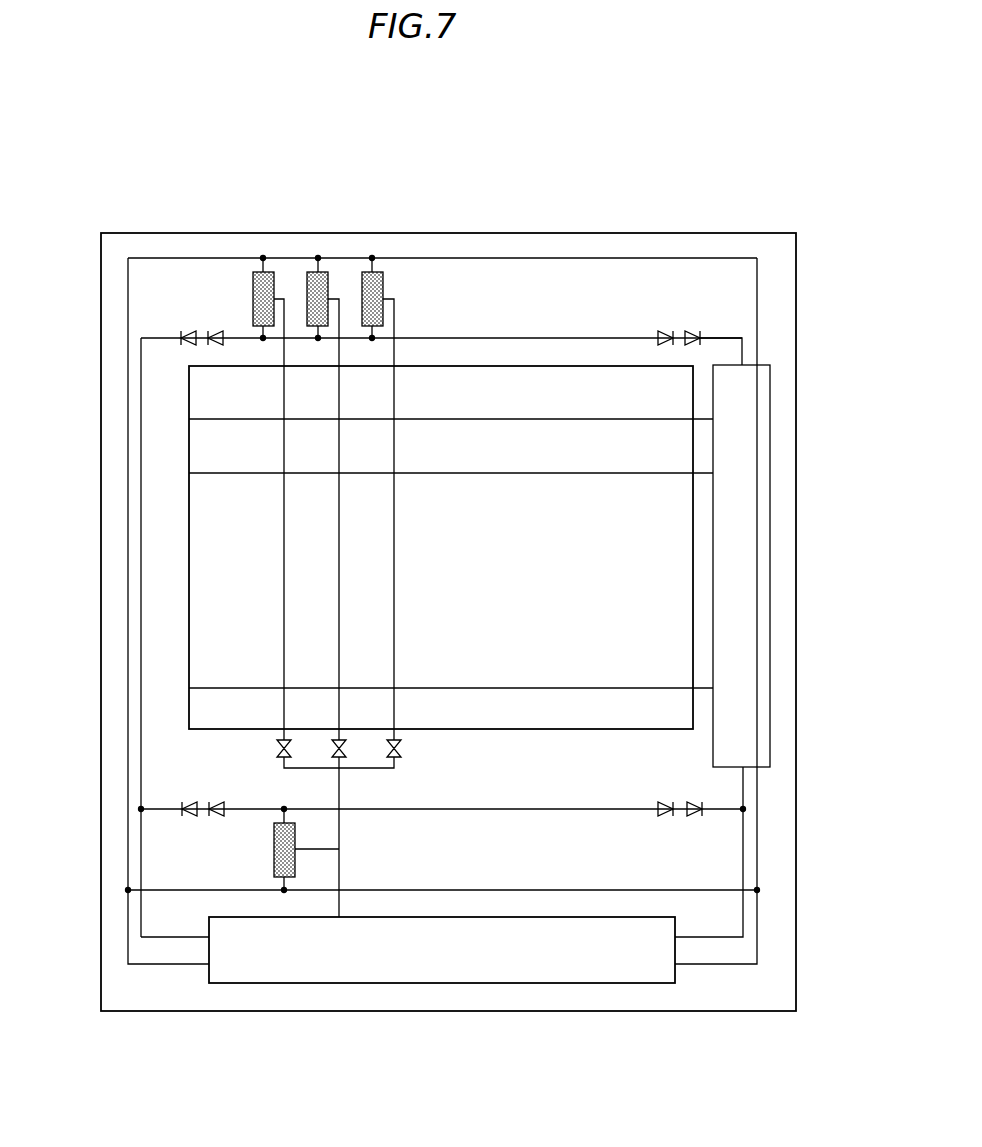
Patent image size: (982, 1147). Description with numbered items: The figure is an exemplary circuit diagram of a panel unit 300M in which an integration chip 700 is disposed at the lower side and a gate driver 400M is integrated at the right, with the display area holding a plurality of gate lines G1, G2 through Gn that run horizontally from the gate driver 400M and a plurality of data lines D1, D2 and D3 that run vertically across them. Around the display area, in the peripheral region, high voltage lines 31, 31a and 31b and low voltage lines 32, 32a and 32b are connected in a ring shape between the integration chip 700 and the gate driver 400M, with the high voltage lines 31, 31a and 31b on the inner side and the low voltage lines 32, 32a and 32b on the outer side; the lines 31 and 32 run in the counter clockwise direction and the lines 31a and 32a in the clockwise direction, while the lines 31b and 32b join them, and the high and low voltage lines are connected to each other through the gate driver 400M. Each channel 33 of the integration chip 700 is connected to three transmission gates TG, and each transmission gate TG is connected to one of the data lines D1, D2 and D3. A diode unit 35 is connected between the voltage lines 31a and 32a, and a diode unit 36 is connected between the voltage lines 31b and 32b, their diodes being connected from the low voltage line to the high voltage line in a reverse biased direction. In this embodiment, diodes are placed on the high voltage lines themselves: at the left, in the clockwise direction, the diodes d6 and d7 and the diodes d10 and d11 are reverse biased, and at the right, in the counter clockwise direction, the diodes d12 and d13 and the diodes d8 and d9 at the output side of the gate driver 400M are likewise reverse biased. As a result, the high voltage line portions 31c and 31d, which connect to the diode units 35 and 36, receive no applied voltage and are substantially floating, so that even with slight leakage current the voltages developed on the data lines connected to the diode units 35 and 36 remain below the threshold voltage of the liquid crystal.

The panel unit 300M is at (121, 203).
The gate driver 400M is at (770, 518).
The integration chip 700 is at (442, 985).
The high voltage line 31 is at (743, 850).
The high voltage line 31a is at (742, 347).
The high voltage line 31b is at (165, 809).
The high voltage line portion 31c is at (537, 337).
The high voltage line portion 31d is at (538, 807).
The low voltage line 32 is at (757, 920).
The low voltage line 32a is at (755, 275).
The low voltage line 32b is at (165, 890).
The channel 33 is at (341, 868).
The diode unit 35 is at (253, 290).
The diode unit 36 is at (274, 849).
The transmission gate TG is at (408, 749).
The gate line G1 is at (436, 420).
The gate line G2 is at (436, 475).
The gate line Gn is at (436, 690).
The data line D1 is at (291, 519).
The data line D2 is at (346, 519).
The data line D3 is at (401, 519).
The diode d6 is at (187, 328).
The diode d7 is at (214, 328).
The diode d8 is at (665, 328).
The diode d9 is at (692, 328).
The diode d10 is at (189, 799).
The diode d11 is at (218, 799).
The diode d12 is at (667, 798).
The diode d13 is at (696, 798).